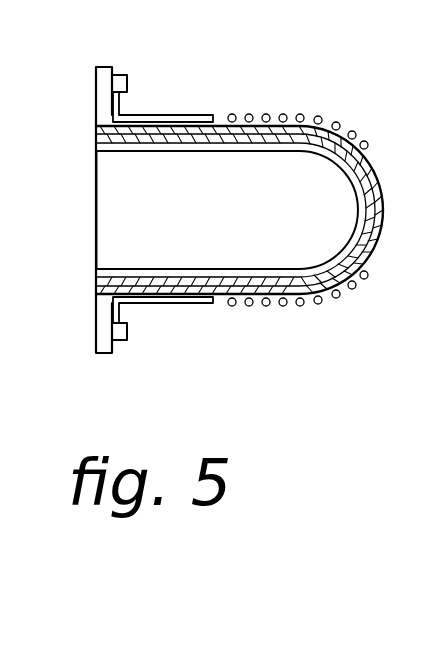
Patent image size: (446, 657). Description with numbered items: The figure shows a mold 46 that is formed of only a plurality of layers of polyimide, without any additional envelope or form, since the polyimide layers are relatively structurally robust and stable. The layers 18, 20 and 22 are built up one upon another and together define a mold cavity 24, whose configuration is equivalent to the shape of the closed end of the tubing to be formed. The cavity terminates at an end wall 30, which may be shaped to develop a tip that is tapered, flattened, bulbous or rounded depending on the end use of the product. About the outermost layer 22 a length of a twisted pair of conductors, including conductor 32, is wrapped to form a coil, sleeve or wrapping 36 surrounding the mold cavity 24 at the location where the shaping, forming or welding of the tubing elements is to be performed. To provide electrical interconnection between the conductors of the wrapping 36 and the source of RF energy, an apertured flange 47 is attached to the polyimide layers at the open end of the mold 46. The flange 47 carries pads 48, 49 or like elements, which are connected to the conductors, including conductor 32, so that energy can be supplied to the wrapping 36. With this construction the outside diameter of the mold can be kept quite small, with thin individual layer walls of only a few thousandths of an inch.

The layer 18 is at (96, 148).
The layer 20 is at (96, 139).
The outermost layer 22 is at (96, 130).
The mold cavity 24 is at (240, 152).
The end wall 30 is at (158, 114).
The conductor 32 is at (170, 304).
The wrapping 36 is at (325, 116).
The mold 46 is at (201, 201).
The apertured flange 47 is at (96, 118).
The pad 48 is at (128, 85).
The pad 49 is at (128, 333).